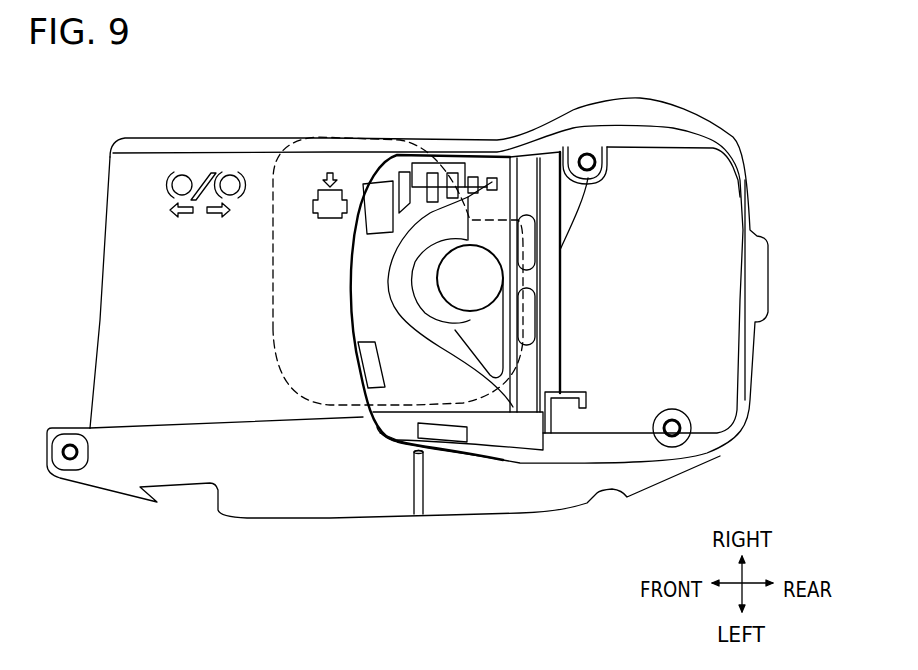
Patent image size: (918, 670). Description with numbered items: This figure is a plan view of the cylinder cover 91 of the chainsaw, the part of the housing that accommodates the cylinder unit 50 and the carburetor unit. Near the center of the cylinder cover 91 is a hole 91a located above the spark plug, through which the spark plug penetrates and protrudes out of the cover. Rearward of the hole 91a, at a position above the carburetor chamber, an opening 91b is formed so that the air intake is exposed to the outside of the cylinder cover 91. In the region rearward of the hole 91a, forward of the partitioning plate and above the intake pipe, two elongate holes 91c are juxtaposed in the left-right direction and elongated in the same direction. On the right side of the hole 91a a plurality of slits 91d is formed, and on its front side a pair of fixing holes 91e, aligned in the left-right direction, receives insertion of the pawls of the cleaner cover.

The cylinder unit 50 is at (275, 168).
The cylinder cover 91 is at (292, 138).
The hole 91a is at (450, 307).
The opening 91b is at (587, 160).
The elongate holes 91c is at (536, 255).
The slits 91d is at (412, 173).
The fixing holes 91e is at (363, 213).